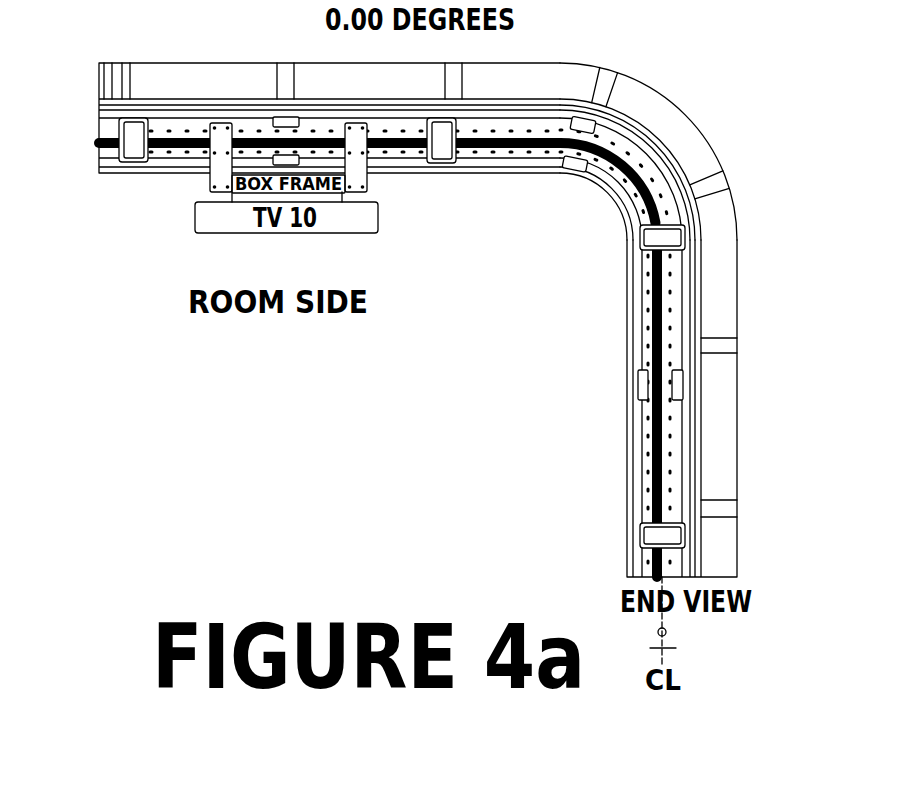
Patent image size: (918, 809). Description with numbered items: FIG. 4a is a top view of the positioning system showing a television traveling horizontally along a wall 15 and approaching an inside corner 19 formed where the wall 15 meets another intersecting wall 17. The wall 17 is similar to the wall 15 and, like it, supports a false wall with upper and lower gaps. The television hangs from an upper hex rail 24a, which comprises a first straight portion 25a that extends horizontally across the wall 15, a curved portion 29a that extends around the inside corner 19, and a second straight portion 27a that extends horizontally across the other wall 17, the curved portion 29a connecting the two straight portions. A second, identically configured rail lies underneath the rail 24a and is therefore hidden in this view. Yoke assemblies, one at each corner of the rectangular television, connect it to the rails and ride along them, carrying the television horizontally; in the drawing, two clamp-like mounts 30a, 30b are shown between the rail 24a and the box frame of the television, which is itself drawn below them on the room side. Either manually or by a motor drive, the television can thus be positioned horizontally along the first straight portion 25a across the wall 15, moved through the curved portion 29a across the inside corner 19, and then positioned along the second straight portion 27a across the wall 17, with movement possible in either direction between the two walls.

The wall 15 is at (206, 62).
The wall 17 is at (737, 438).
The inside corner 19 is at (685, 115).
The hex rail 24a is at (119, 145).
The first straight portion 25a is at (483, 150).
The second straight portion 27a is at (640, 311).
The curved portion 29a is at (622, 175).
The left mounting clamp 30a is at (208, 175).
The right mounting clamp 30b is at (368, 177).